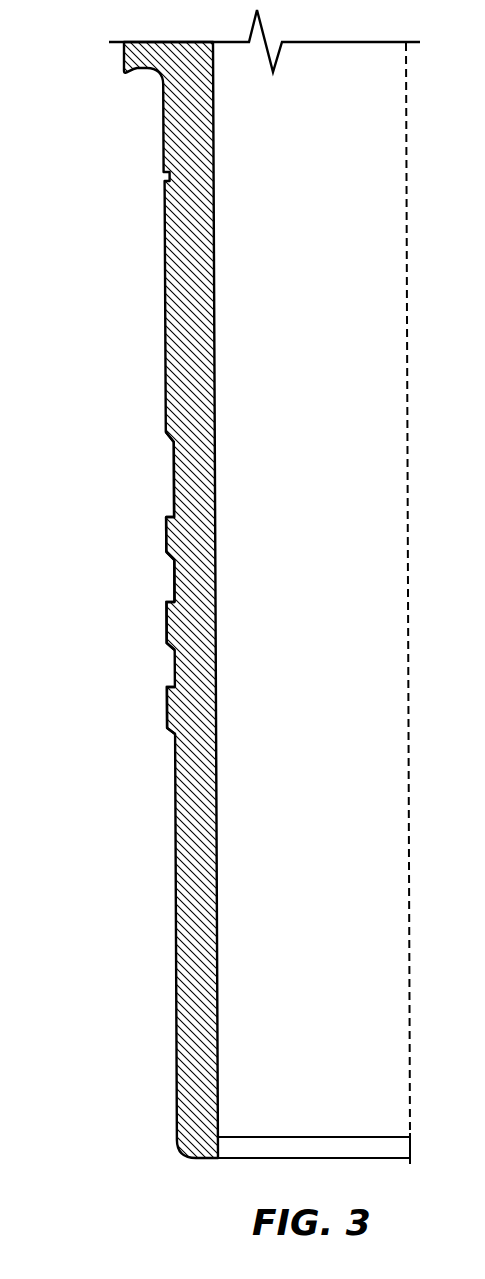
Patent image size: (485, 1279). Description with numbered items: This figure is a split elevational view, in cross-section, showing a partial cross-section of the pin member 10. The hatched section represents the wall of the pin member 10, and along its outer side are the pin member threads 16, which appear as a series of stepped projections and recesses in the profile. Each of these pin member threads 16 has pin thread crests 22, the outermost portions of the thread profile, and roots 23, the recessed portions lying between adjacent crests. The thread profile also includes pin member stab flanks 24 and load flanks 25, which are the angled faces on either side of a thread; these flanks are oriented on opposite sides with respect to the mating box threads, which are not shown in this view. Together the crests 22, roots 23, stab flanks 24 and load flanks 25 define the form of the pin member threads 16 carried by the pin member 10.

The pin member 10 is at (124, 62).
The pin member threads 16 is at (166, 533).
The load flanks 25 is at (174, 512).
The pin member stab flanks 24 is at (172, 560).
The roots 23 is at (177, 655).
The pin thread crests 22 is at (168, 713).